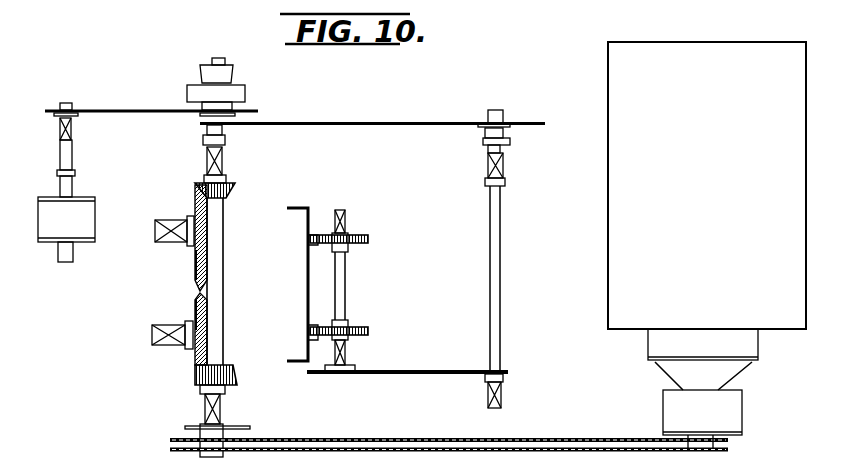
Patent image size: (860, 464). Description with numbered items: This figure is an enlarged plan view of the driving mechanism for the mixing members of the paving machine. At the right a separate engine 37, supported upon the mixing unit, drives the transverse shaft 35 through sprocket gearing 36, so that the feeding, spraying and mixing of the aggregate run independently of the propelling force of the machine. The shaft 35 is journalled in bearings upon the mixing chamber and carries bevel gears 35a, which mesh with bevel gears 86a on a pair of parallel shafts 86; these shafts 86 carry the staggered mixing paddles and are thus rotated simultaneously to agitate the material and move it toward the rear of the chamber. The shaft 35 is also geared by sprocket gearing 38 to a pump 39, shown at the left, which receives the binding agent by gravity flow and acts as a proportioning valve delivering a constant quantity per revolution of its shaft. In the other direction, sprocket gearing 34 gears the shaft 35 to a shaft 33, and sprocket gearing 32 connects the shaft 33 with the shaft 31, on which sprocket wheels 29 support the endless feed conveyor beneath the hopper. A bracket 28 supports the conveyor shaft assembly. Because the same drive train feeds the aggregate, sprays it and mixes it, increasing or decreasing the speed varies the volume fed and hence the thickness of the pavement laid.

The bracket 28 is at (303, 270).
The sprocket wheels 29 is at (367, 235).
The shaft 31 is at (340, 282).
The sprocket gearing 32 is at (433, 375).
The shaft 33 is at (498, 300).
The sprocket gearing 34 is at (362, 122).
The transverse shaft 35 is at (215, 333).
The bevel gears 35a is at (233, 192).
The sprocket gearing 36 is at (530, 438).
The engine 37 is at (707, 245).
The sprocket gearing 38 is at (110, 110).
The pump 39 is at (80, 223).
The shafts 86 is at (172, 218).
The bevel gears 86a is at (200, 258).